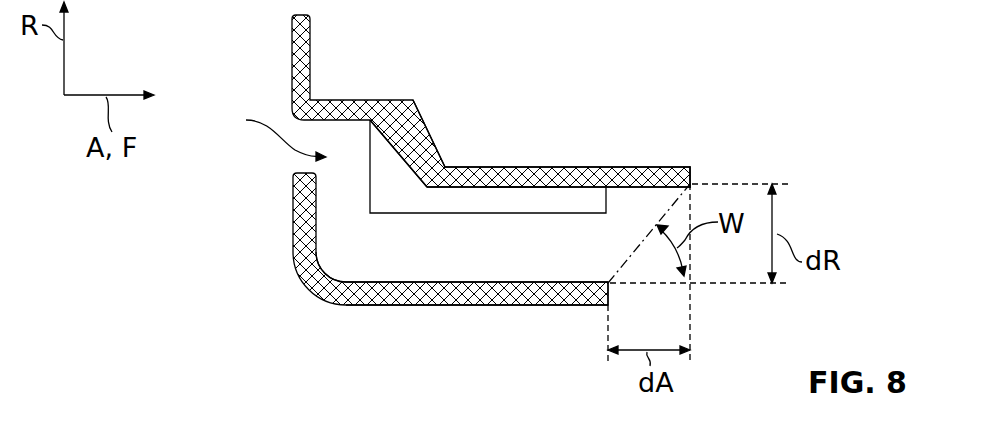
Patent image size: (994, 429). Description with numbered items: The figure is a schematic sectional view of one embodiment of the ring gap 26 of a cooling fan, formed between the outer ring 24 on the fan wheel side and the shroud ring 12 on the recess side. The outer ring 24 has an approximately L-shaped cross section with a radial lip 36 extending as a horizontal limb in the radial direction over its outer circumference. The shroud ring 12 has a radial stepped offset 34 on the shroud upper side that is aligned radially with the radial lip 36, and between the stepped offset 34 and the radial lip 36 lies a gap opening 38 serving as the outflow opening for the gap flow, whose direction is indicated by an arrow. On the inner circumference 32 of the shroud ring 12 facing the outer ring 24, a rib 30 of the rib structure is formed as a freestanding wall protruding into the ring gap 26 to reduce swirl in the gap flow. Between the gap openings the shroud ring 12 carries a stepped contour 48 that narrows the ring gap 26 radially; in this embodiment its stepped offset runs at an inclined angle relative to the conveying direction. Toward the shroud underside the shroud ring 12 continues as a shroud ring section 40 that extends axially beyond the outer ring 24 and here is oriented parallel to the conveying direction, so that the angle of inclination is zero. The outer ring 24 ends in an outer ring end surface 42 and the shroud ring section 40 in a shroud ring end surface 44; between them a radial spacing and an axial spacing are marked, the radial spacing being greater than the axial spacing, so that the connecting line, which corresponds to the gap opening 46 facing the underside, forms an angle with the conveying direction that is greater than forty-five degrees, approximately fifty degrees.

The shroud ring 12 is at (565, 172).
The outer ring 24 is at (410, 303).
The ring gap 26 is at (343, 265).
The rib 30 is at (537, 200).
The inner circumference 32 is at (515, 188).
The stepped offset 34 is at (300, 48).
The radial lip 36 is at (300, 233).
The gap opening 38 is at (267, 134).
The shroud ring section 40 is at (652, 168).
The outer ring end surface 42 is at (616, 295).
The shroud ring end surface 44 is at (693, 177).
The gap opening 46 is at (637, 250).
The stepped contour 48 is at (425, 135).